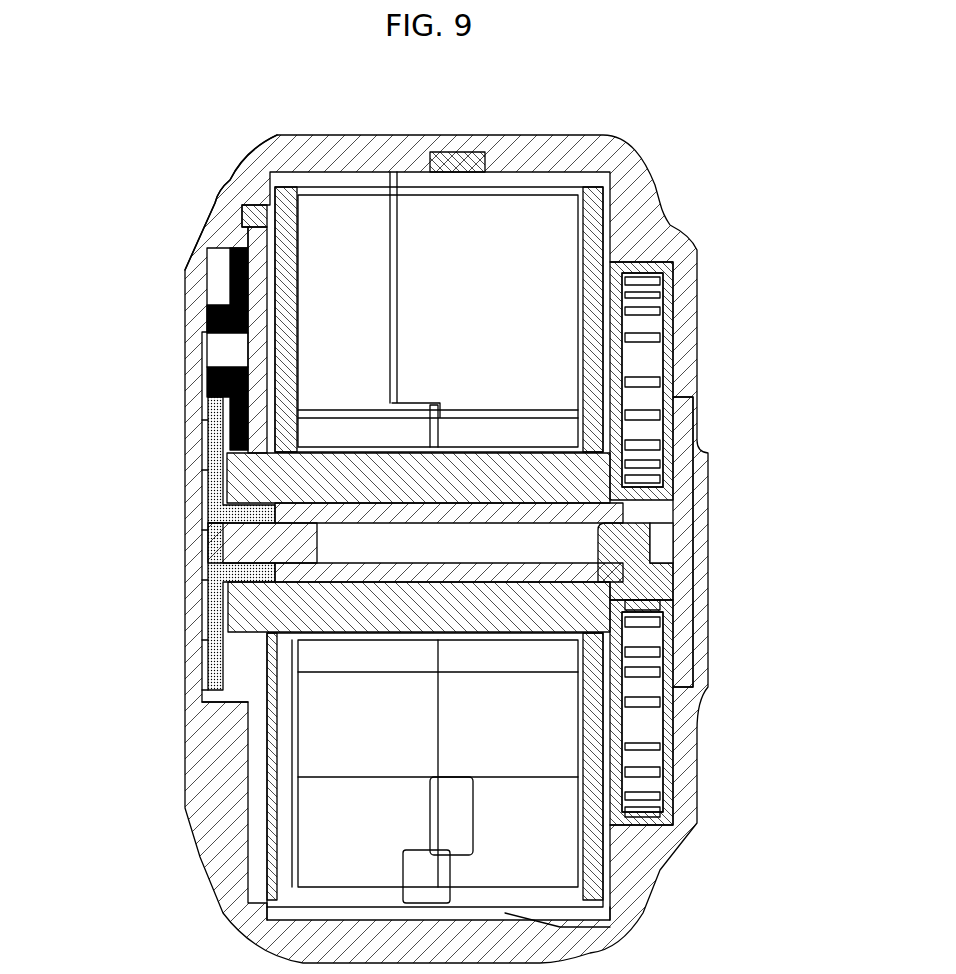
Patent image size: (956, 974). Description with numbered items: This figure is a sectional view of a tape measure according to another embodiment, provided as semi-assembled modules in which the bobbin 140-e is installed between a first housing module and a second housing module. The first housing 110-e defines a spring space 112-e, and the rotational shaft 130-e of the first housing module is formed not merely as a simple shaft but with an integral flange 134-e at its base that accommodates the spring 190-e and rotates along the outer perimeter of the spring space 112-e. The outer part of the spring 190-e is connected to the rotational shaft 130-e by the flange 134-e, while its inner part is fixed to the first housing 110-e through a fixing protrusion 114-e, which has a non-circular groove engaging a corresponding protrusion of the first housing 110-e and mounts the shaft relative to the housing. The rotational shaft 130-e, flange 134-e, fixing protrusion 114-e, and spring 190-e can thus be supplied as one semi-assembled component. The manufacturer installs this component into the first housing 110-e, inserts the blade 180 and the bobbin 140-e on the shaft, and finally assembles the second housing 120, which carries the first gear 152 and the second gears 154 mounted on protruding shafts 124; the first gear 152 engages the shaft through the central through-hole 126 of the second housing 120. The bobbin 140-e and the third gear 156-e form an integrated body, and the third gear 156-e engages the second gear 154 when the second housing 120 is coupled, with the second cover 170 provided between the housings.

The first housing 110-e is at (662, 187).
The second housing 120 is at (217, 197).
The blade 180 is at (508, 203).
The second gear 154 is at (207, 310).
The protruding shaft 124 is at (220, 358).
The first gear 152 is at (202, 447).
The third gear 156-e is at (230, 481).
The central through-hole 126 is at (190, 548).
The second cover 170 is at (245, 735).
The flange 134-e is at (663, 272).
The spring 190-e is at (640, 377).
The rotational shaft 130-e is at (557, 572).
The fixing protrusion 114-e is at (662, 545).
The bobbin 140-e is at (630, 600).
The spring space 112-e is at (648, 716).